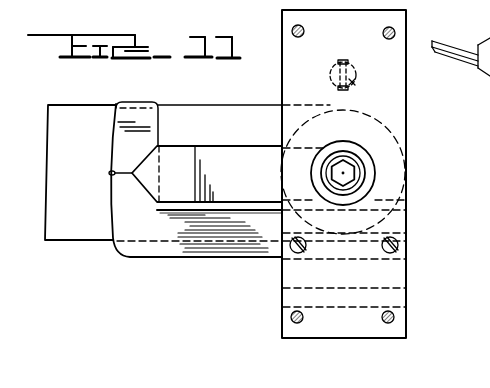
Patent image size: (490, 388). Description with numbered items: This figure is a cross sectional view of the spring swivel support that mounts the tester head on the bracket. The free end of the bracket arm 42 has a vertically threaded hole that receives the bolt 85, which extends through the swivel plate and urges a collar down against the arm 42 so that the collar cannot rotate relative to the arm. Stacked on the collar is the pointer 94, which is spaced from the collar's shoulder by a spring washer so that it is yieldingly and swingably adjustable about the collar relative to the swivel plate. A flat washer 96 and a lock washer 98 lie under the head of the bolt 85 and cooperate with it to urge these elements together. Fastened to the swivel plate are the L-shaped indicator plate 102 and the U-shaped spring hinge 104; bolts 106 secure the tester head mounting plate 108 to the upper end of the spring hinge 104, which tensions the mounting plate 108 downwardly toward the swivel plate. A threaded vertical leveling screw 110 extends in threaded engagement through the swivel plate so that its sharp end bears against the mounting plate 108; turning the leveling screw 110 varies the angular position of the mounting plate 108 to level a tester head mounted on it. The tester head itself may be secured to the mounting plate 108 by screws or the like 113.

The bracket arm 42 is at (100, 236).
The bolt 85 is at (349, 170).
The pointer 94 is at (259, 167).
The flat washer 96 is at (364, 182).
The lock washer 98 is at (342, 150).
The L-shaped indicator plate 102 is at (118, 216).
The U-shaped spring hinge 104 is at (400, 302).
The bolts 106 is at (398, 243).
The tester head mounting plate 108 is at (288, 79).
The leveling screw 110 is at (354, 82).
The screws 113 is at (292, 33).